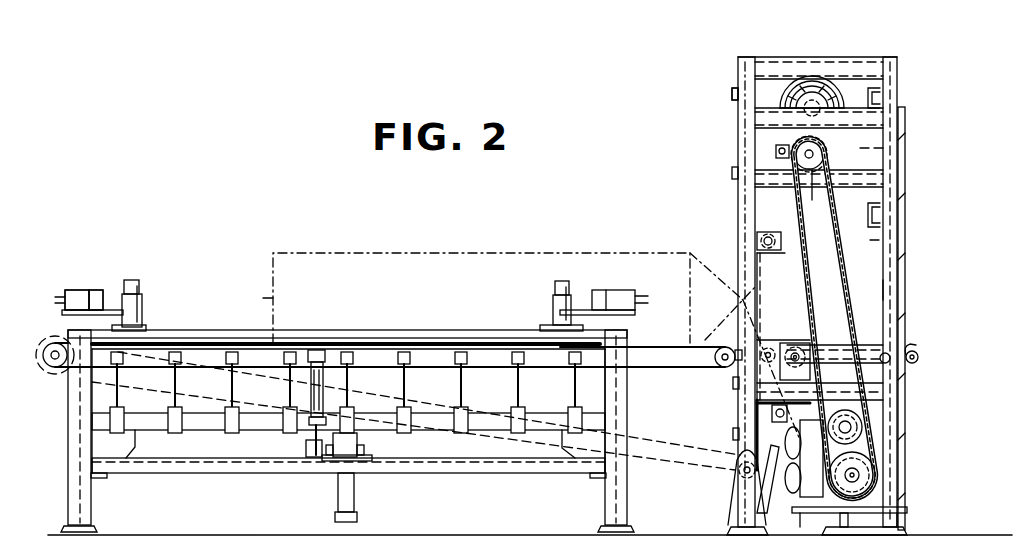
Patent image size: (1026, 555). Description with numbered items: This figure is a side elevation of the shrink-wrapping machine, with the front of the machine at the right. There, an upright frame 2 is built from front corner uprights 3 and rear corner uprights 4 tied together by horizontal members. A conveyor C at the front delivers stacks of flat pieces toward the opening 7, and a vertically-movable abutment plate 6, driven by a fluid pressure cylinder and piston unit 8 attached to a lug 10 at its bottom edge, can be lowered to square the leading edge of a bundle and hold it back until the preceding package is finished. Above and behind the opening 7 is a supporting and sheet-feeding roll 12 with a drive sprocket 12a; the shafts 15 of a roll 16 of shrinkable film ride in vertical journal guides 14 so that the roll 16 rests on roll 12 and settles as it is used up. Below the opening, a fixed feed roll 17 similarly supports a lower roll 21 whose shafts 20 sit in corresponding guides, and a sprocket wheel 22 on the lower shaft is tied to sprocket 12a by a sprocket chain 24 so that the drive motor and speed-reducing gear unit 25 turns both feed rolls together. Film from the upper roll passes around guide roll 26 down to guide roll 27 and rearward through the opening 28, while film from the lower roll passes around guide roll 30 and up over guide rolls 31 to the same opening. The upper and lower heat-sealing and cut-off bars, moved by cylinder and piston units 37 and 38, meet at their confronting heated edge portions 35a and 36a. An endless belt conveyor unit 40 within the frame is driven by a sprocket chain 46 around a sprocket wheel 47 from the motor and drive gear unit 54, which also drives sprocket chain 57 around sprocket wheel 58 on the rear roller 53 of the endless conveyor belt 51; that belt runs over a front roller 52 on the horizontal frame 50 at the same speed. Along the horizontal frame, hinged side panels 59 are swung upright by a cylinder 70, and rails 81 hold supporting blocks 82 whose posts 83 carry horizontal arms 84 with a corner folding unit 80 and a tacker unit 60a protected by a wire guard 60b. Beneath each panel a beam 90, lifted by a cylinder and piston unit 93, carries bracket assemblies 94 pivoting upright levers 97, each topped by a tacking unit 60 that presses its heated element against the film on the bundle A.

The upright frame 2 is at (810, 274).
The corner uprights 3 is at (897, 75).
The corner uprights 4 is at (737, 78).
The abutment plate 6 is at (905, 125).
The opening 7 is at (903, 292).
The fluid pressure cylinder and piston unit 8 is at (869, 145).
The lug 10 is at (866, 238).
The supporting and sheet-feeding roll 12 is at (832, 152).
The drive sprocket 12a is at (813, 172).
The vertical journal guides 14 is at (830, 107).
The shafts 15 is at (814, 84).
The roll 16 is at (796, 78).
The fixed feed roll 17 is at (849, 519).
The shafts 20 is at (820, 383).
The roll 21 is at (882, 416).
The sprocket wheel 22 is at (878, 478).
The sprocket chain 24 is at (806, 255).
The drive motor and speed-reducing gear unit 25 is at (777, 491).
The guide roll 26 is at (775, 151).
The guide roll 27 is at (766, 251).
The opening 28 is at (760, 298).
The guide roll 30 is at (796, 476).
The guide rolls 31 is at (770, 347).
The confronting edge portion 35a is at (757, 241).
The confronting edge portion 36a is at (700, 352).
The fluid pressure cylinder and piston unit 37 is at (735, 116).
The fluid pressure cylinder and piston unit 38 is at (733, 410).
The endless belt conveyor unit 40 is at (838, 345).
The sprocket chain 46 is at (737, 431).
The sprocket wheel 47 is at (795, 347).
The frame 50 is at (627, 495).
The endless conveyor belt 51 is at (672, 345).
The front roller 52 is at (723, 366).
The rear roller 53 is at (56, 341).
The motor and drive gear unit 54 is at (735, 476).
The sprocket chain 57 is at (663, 440).
The sprocket wheel 58 is at (58, 373).
The side panels 59 is at (356, 360).
The tacking unit 60 is at (237, 362).
The tacker unit 60a is at (76, 270).
The guard 60b is at (62, 298).
The cylinder 70 is at (323, 396).
The corner folding unit 80 is at (93, 289).
The rails 81 is at (205, 330).
The supporting blocks 82 is at (146, 326).
The post 83 is at (140, 289).
The horizontal arm 84 is at (110, 310).
The beam 90 is at (257, 421).
The fluid pressure cylinder and piston unit 93 is at (358, 500).
The bracket assemblies 94 is at (181, 421).
The upright lever 97 is at (178, 381).
The article A is at (447, 252).
The conveyor C is at (912, 350).